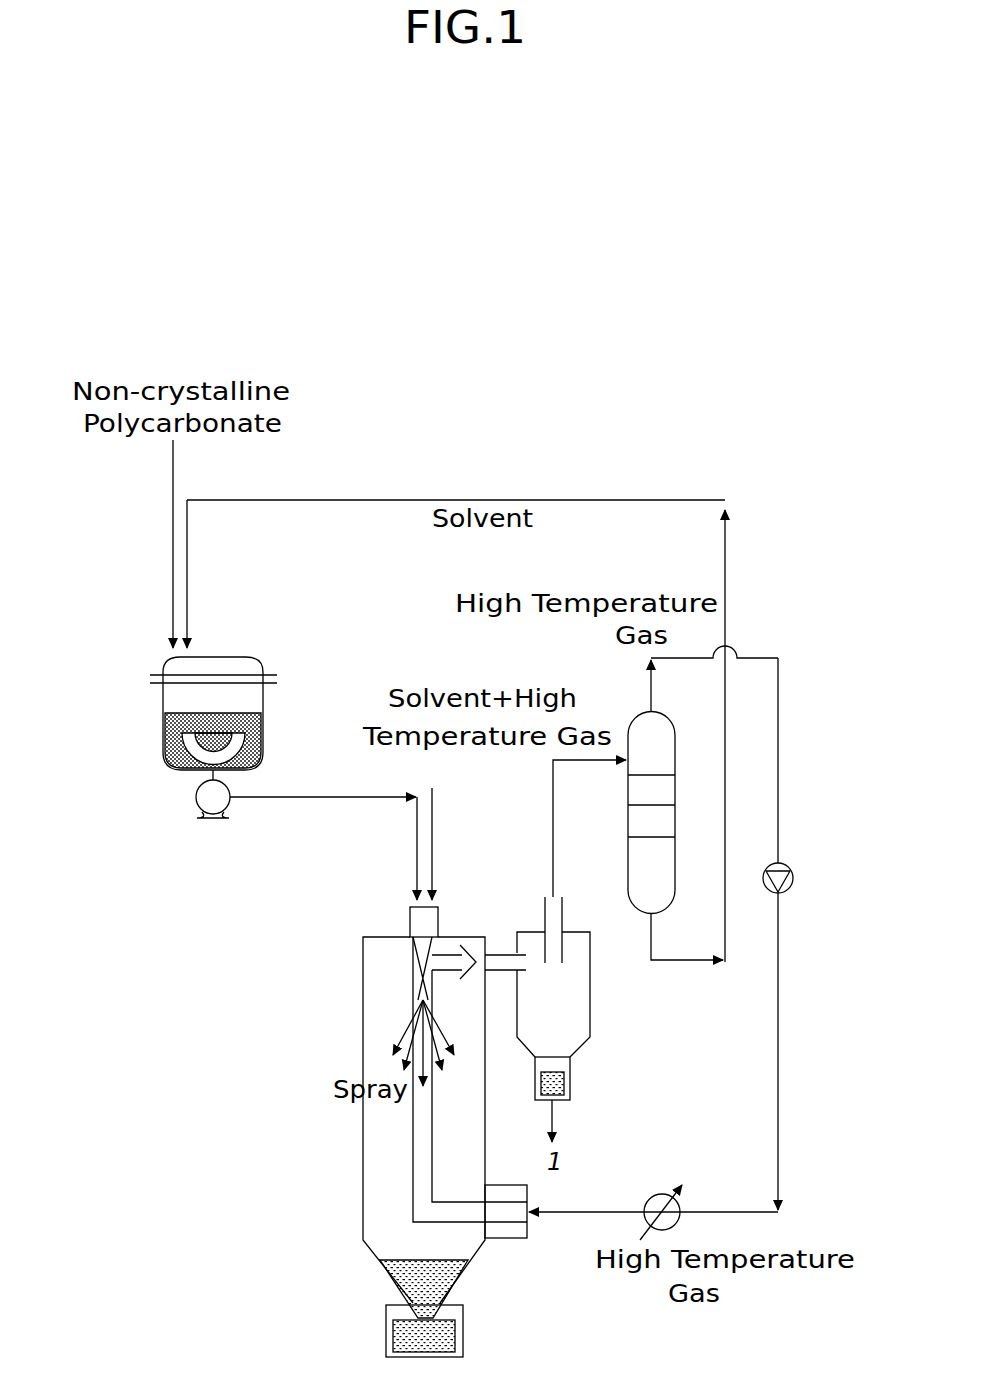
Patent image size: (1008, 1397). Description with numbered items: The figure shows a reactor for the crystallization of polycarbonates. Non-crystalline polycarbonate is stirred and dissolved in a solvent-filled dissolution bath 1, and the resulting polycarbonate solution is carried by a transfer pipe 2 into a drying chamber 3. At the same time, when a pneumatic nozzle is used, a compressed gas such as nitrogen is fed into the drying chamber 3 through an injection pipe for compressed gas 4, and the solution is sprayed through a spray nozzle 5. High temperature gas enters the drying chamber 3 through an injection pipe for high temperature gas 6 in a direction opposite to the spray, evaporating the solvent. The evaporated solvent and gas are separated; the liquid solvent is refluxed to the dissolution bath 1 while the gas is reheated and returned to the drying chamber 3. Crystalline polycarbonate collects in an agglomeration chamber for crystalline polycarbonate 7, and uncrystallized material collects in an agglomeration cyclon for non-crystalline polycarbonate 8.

The dissolution bath 1 is at (160, 697).
The transfer pipe for polycarbonate solution 2 is at (411, 852).
The drying chamber 3 is at (361, 1182).
The injection pipe for compressed gas 4 is at (439, 833).
The spray nozzle 5 is at (410, 961).
The injection pipe for high temperature gas 6 is at (631, 1211).
The agglomeration chamber for crystalline polycarbonate 7 is at (424, 1331).
The agglomeration cyclon for non-crystalline polycarbonate 8 is at (564, 1099).